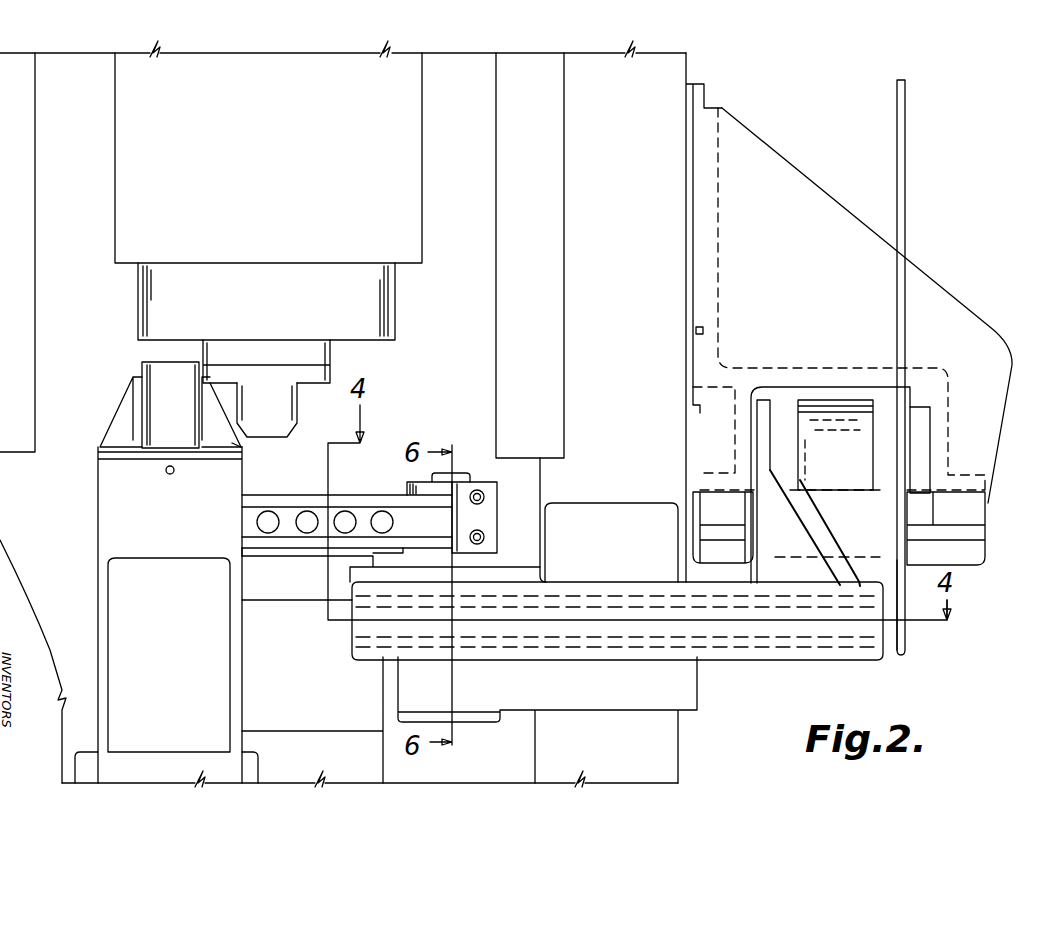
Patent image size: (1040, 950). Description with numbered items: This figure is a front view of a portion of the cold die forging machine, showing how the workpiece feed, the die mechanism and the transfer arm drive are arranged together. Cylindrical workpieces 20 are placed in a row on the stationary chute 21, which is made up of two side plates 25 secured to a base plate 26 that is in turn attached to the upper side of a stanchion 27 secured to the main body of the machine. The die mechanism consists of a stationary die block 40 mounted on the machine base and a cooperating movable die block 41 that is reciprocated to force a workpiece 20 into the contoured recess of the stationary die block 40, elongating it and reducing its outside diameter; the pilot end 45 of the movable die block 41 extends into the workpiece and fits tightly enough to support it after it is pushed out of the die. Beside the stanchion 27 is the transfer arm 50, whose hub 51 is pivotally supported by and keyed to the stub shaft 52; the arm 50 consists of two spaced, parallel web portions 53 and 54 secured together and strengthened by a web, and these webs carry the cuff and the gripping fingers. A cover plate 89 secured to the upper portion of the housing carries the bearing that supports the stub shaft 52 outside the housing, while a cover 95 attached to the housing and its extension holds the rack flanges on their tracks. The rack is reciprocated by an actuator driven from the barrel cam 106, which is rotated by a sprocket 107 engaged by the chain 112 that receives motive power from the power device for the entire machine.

The cylindrical workpiece 20 is at (158, 370).
The stationary chute 21 is at (140, 413).
The side plates 25 is at (232, 443).
The base plate 26 is at (190, 458).
The stanchion 27 is at (108, 540).
The stationary die block 40 is at (262, 563).
The movable die block 41 is at (385, 324).
The pilot end 45 is at (285, 408).
The arm 50 is at (295, 513).
The hub 51 is at (499, 502).
The stub shaft 52 is at (465, 472).
The upper web portion 53 is at (357, 502).
The lower web portion 54 is at (290, 548).
The cover plate 89 is at (503, 568).
The cover 95 is at (743, 655).
The barrel cam 106 is at (825, 398).
The sprocket 107 is at (908, 640).
The chain 112 is at (906, 219).